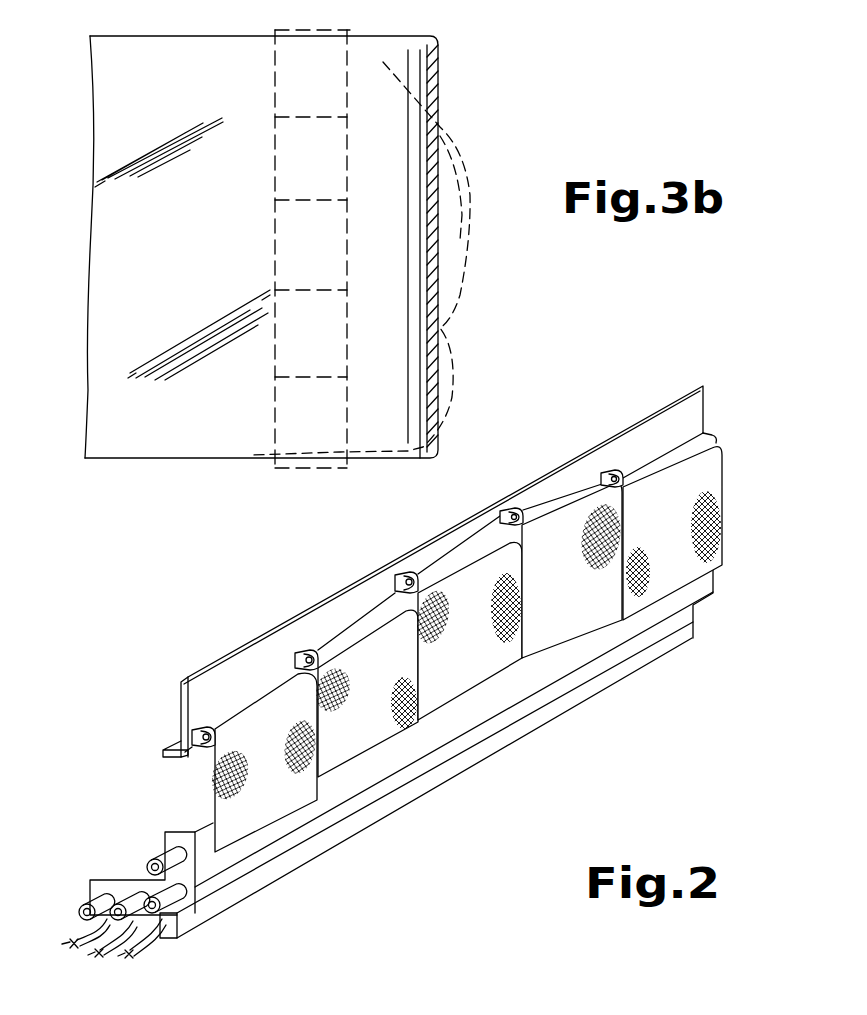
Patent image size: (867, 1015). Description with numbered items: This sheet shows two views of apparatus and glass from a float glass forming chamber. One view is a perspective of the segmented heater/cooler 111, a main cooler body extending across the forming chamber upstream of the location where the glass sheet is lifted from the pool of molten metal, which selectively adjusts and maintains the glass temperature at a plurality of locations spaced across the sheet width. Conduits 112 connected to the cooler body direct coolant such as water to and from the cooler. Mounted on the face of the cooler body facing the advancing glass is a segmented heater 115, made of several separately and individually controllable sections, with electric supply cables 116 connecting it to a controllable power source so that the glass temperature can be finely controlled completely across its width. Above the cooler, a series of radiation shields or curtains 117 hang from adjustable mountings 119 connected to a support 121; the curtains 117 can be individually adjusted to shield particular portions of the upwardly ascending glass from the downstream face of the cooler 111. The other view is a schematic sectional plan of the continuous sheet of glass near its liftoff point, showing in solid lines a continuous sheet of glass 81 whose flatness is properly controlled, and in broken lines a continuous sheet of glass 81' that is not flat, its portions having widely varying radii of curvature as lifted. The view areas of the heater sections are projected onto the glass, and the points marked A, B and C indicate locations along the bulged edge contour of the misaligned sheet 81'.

In FIG. 3B, the continuous sheet of glass 81 is at (261, 249).
In FIG. 3B, the continuous sheet of glass that is not flat 81' is at (390, 258).
In FIG. 3B, the reference point A is at (383, 62).
In FIG. 3B, the reference point B is at (440, 130).
In FIG. 3B, the reference point C is at (466, 227).
In FIG. 2, the segmented heater/cooler 111 is at (90, 882).
In FIG. 2, the conduits 112 is at (150, 896).
In FIG. 2, the segmented heater 115 is at (210, 908).
In FIG. 2, the electric supply cables 116 is at (121, 948).
In FIG. 2, the radiation shields or curtains 117 is at (722, 518).
In FIG. 2, the adjustable mountings 119 is at (395, 582).
In FIG. 2, the support 121 is at (181, 688).